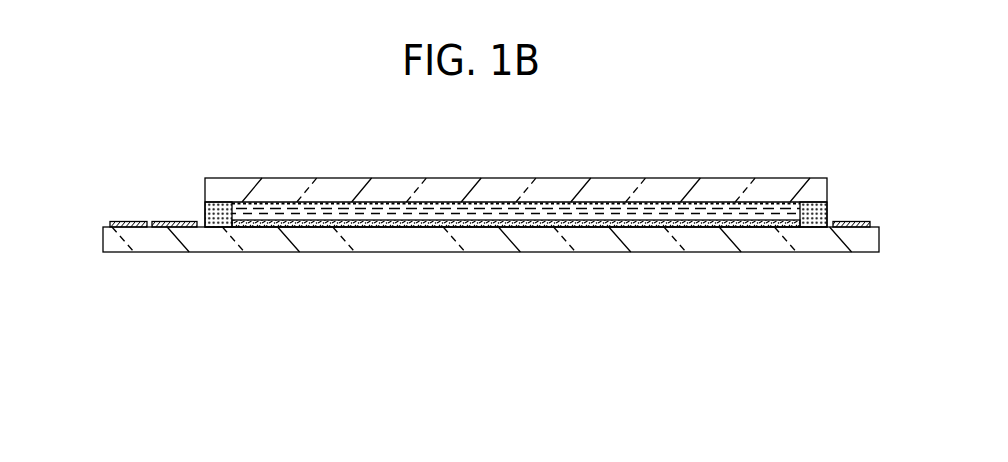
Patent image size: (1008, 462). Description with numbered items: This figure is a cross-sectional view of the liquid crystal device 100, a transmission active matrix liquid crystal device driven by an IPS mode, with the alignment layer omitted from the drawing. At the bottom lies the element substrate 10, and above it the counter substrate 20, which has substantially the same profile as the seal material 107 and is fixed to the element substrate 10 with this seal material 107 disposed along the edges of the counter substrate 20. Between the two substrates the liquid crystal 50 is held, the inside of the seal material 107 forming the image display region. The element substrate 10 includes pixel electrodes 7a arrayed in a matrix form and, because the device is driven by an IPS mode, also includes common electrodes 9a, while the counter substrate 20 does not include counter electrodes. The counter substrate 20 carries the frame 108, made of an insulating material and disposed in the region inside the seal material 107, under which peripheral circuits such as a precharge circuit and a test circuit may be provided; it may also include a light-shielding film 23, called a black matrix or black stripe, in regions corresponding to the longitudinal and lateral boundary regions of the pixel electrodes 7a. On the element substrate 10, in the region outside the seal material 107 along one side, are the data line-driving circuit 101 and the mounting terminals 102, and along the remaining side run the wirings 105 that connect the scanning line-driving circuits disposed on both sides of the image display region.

The liquid crystal device 100 is at (687, 125).
The element substrate 10 is at (713, 242).
The counter substrate 20 is at (803, 200).
The frame 108 is at (242, 200).
The light-shielding film 23 is at (562, 200).
The liquid crystal 50 is at (560, 213).
The pixel electrodes 7a is at (390, 227).
The common electrodes 9a is at (299, 252).
The seal material 107 is at (220, 227).
The mounting terminals 102 is at (127, 221).
The data line-driving circuit 101 is at (178, 221).
The wirings 105 is at (862, 221).